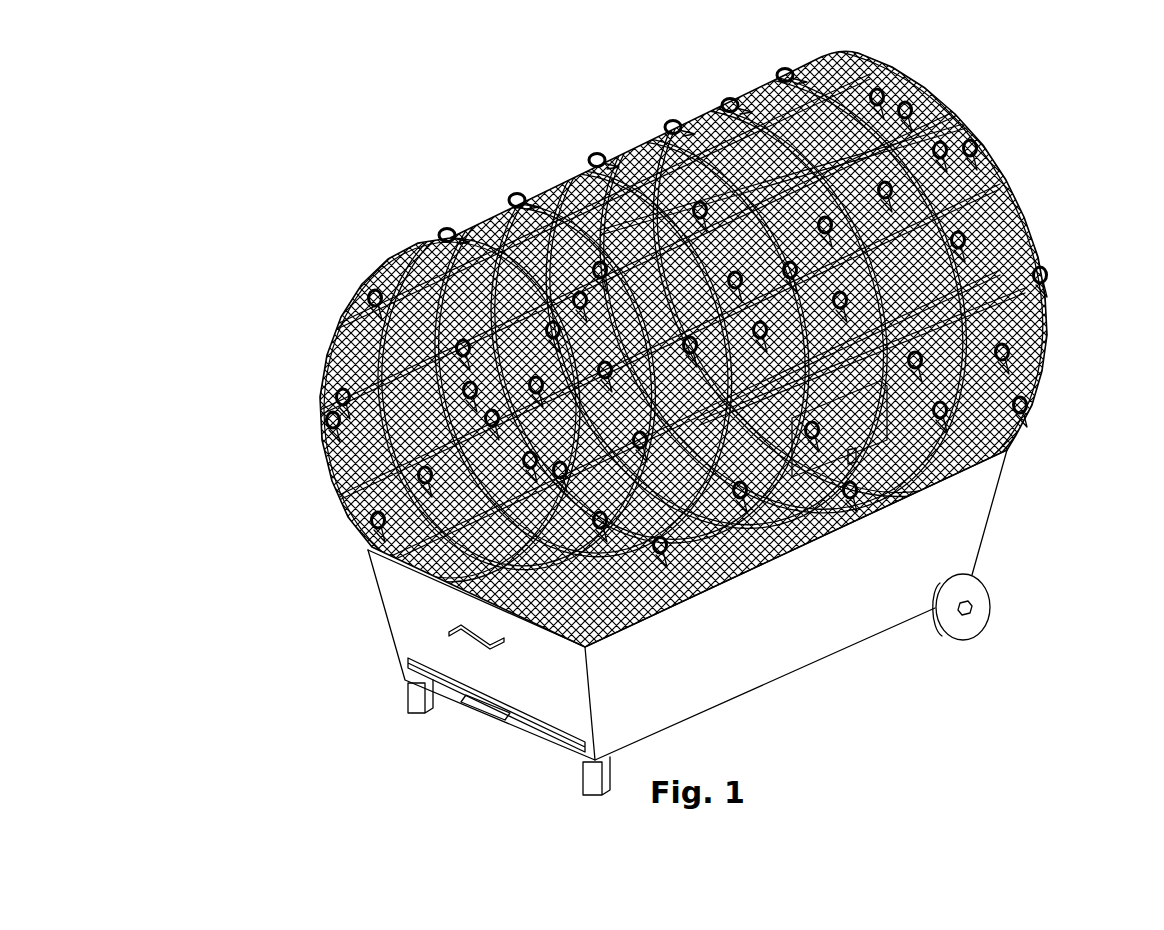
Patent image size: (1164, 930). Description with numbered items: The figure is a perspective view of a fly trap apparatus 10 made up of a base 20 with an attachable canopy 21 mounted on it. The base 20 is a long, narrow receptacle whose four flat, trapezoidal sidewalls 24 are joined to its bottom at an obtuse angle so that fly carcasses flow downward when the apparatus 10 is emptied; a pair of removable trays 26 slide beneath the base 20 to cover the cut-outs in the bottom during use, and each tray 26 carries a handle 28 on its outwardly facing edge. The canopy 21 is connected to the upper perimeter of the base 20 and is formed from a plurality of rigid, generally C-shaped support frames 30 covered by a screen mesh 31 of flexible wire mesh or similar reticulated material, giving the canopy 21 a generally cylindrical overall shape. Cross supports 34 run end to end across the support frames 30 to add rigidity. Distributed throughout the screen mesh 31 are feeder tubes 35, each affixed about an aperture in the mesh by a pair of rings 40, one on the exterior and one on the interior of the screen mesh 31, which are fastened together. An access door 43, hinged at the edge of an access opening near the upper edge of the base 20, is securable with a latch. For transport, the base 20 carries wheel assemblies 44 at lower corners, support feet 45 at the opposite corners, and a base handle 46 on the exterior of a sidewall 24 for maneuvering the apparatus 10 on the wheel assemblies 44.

The apparatus 10 is at (246, 170).
The base 20 is at (695, 622).
The canopy 21 is at (703, 323).
The sidewalls 24 is at (393, 618).
The removable trays 26 is at (518, 717).
The handle 28 is at (463, 707).
The support frames 30 is at (352, 287).
The screen mesh 31 is at (1010, 218).
The cross supports 34 is at (955, 105).
The feeder tubes 35 is at (602, 155).
The rings 40 is at (877, 97).
The access door 43 is at (852, 450).
The wheel assemblies 44 is at (978, 599).
The support feet 45 is at (408, 703).
The base handle 46 is at (447, 631).